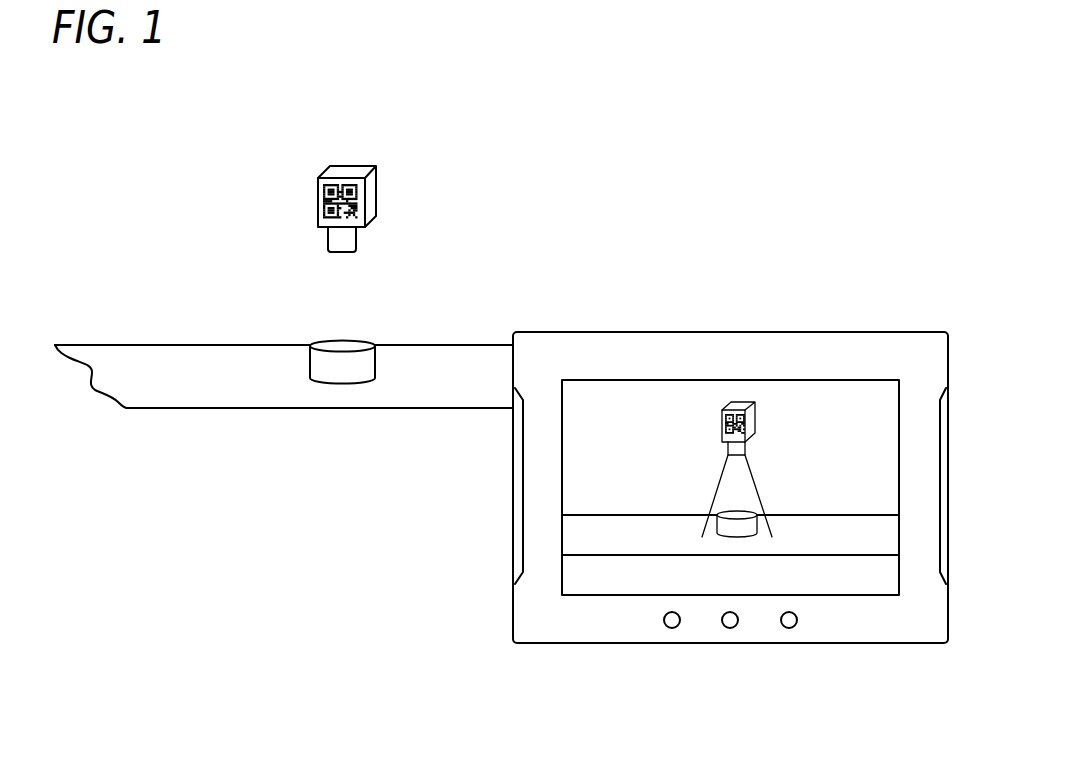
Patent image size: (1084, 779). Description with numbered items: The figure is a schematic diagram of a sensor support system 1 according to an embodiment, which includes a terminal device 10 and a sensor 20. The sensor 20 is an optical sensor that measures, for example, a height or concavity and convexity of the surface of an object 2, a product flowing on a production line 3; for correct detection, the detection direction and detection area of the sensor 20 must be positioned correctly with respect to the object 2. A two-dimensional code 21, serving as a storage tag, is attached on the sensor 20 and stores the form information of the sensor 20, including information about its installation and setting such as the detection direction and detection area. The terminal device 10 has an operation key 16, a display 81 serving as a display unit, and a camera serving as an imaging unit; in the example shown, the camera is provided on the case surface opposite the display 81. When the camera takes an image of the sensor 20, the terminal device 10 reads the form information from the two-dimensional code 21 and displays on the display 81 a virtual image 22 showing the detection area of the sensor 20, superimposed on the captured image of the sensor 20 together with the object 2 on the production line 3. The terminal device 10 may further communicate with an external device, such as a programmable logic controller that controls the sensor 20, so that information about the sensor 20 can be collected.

The sensor support system 1 is at (843, 163).
The object 2 is at (343, 368).
The production line 3 is at (133, 367).
The terminal device 10 is at (915, 358).
The operation key 16 is at (672, 629).
The sensor 20 is at (317, 182).
The two-dimensional code 21 is at (322, 203).
The virtual image 22 is at (757, 482).
The display 81 is at (846, 410).